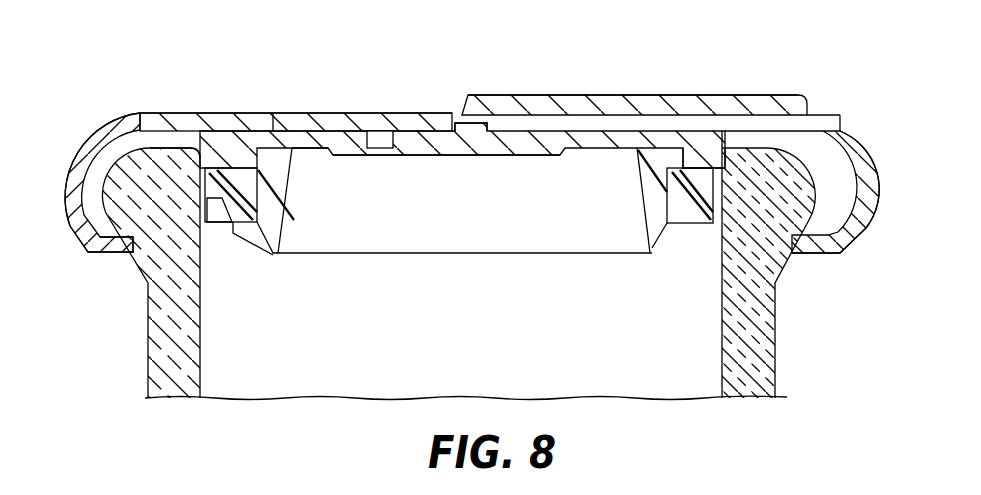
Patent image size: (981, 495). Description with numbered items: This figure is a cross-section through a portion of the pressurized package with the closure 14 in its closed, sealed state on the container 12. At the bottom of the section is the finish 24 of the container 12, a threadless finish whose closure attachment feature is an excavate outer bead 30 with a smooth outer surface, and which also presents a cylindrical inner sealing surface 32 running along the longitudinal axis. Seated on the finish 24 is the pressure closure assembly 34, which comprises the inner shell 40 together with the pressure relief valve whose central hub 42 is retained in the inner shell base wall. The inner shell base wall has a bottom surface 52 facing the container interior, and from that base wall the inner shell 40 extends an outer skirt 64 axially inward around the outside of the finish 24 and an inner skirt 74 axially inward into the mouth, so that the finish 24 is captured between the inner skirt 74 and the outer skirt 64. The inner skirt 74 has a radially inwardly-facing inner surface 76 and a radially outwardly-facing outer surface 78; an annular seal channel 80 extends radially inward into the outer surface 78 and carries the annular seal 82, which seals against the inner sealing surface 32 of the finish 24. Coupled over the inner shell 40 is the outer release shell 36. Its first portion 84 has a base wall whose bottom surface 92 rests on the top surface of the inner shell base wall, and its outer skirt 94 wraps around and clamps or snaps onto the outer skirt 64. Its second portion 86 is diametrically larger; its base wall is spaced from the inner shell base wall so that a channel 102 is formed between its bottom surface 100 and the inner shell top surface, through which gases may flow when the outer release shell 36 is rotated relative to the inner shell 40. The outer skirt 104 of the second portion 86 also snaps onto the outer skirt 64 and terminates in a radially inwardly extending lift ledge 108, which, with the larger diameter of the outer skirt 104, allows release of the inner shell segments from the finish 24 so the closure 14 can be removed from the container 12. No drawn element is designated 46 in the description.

The container 12 is at (163, 372).
The closure 14 is at (88, 147).
The finish 24 is at (807, 273).
The outer bead 30 is at (143, 163).
The inner sealing surface 32 is at (200, 190).
The pressure closure assembly 34 is at (590, 262).
The outer release shell 36 is at (110, 128).
The inner shell 40 is at (663, 230).
The central hub 42 is at (455, 131).
The aperture 46 is at (378, 130).
The bottom surface 52 is at (322, 148).
The outer skirt 64 is at (826, 185).
The inner skirt 74 is at (260, 240).
The inner surface 76 is at (283, 196).
The outer surface 78 is at (245, 235).
The annular seal channel 80 is at (680, 165).
The annular seal 82 is at (227, 167).
The first portion 84 is at (185, 113).
The second portion 86 is at (767, 95).
The bottom surface 92 is at (273, 113).
The outer skirt 94 is at (72, 180).
The bottom surface 100 is at (593, 126).
The channel 102 is at (777, 123).
The outer skirt 104 is at (876, 180).
The lift ledge 108 is at (835, 251).